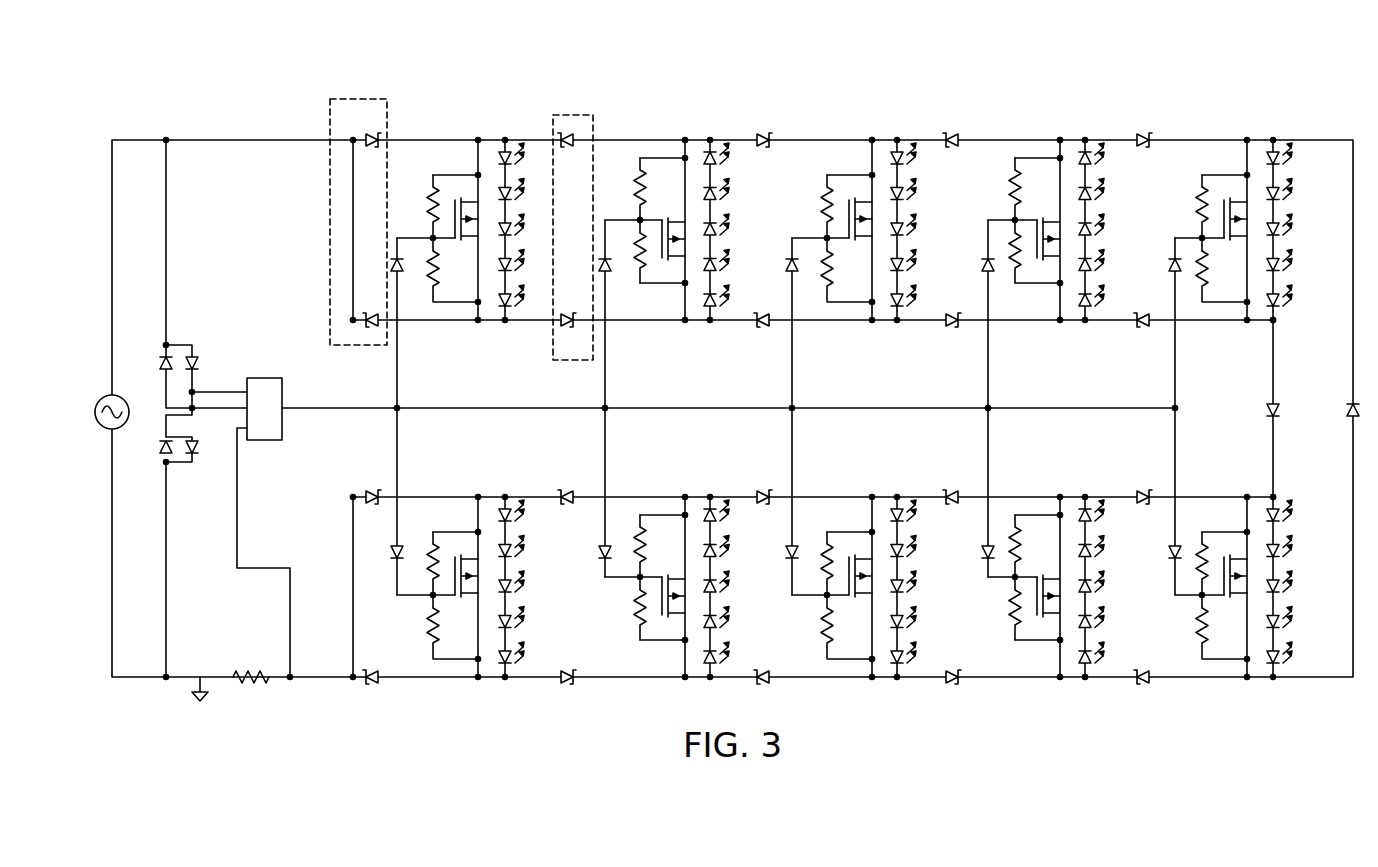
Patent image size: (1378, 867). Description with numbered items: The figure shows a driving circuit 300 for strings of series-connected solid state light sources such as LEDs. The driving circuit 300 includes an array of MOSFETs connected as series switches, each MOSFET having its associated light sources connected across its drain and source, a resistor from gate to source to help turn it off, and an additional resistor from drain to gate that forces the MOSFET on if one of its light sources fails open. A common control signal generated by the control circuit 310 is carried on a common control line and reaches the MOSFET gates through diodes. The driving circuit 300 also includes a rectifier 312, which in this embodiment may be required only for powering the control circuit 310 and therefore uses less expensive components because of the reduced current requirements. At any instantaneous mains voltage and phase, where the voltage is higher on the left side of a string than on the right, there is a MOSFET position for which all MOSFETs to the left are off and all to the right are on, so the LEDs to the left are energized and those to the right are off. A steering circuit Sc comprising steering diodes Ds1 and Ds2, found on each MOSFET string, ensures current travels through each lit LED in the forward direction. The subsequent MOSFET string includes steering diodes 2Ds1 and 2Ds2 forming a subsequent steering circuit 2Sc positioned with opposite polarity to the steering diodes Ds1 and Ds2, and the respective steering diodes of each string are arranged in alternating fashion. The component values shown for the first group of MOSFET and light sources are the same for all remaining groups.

The driving circuit 300 is at (757, 56).
The steering circuit Sc is at (353, 100).
The subsequent steering circuit 2Sc is at (560, 113).
The steering diode Ds1 is at (353, 140).
The steering diode Ds2 is at (353, 320).
The steering diode 2Ds1 is at (550, 136).
The steering diode 2Ds2 is at (550, 320).
The control circuit 310 is at (272, 425).
The rectifier 312 is at (178, 440).